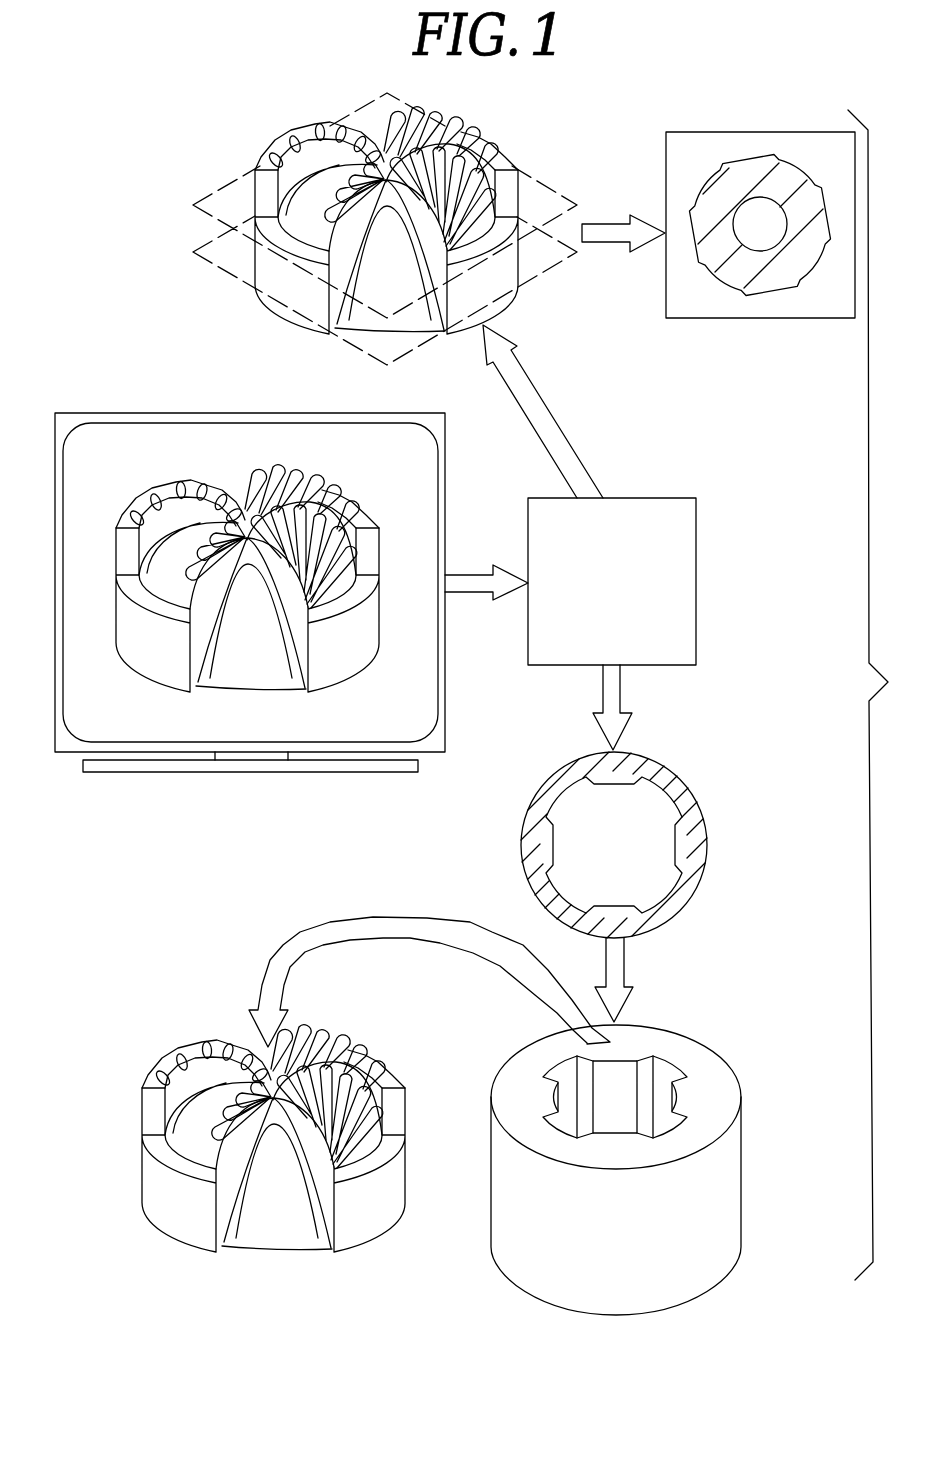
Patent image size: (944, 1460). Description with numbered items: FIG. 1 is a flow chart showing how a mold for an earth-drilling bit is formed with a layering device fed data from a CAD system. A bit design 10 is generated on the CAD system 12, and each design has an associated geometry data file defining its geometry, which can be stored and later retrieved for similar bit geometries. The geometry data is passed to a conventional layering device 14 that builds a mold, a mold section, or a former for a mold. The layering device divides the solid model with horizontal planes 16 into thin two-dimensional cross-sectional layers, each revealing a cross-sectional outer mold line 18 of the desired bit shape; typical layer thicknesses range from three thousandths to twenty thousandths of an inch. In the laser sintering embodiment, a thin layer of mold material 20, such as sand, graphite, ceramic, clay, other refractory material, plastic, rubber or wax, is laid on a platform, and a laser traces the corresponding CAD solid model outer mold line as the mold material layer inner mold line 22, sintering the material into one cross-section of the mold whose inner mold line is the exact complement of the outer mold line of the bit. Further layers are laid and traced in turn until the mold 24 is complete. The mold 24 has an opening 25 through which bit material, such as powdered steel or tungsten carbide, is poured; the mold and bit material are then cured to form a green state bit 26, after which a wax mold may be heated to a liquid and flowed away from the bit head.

The bit design 10 is at (365, 520).
The CAD system 12 is at (128, 412).
The layering device 14 is at (648, 498).
The horizontal planes 16 is at (232, 185).
The cross-sectional outer mold line 18 is at (752, 160).
The mold material 20 is at (685, 795).
The mold material layer inner mold line 22 is at (675, 872).
The mold 24 is at (720, 1073).
The opening 25 is at (660, 1118).
The bit 26 is at (155, 1175).